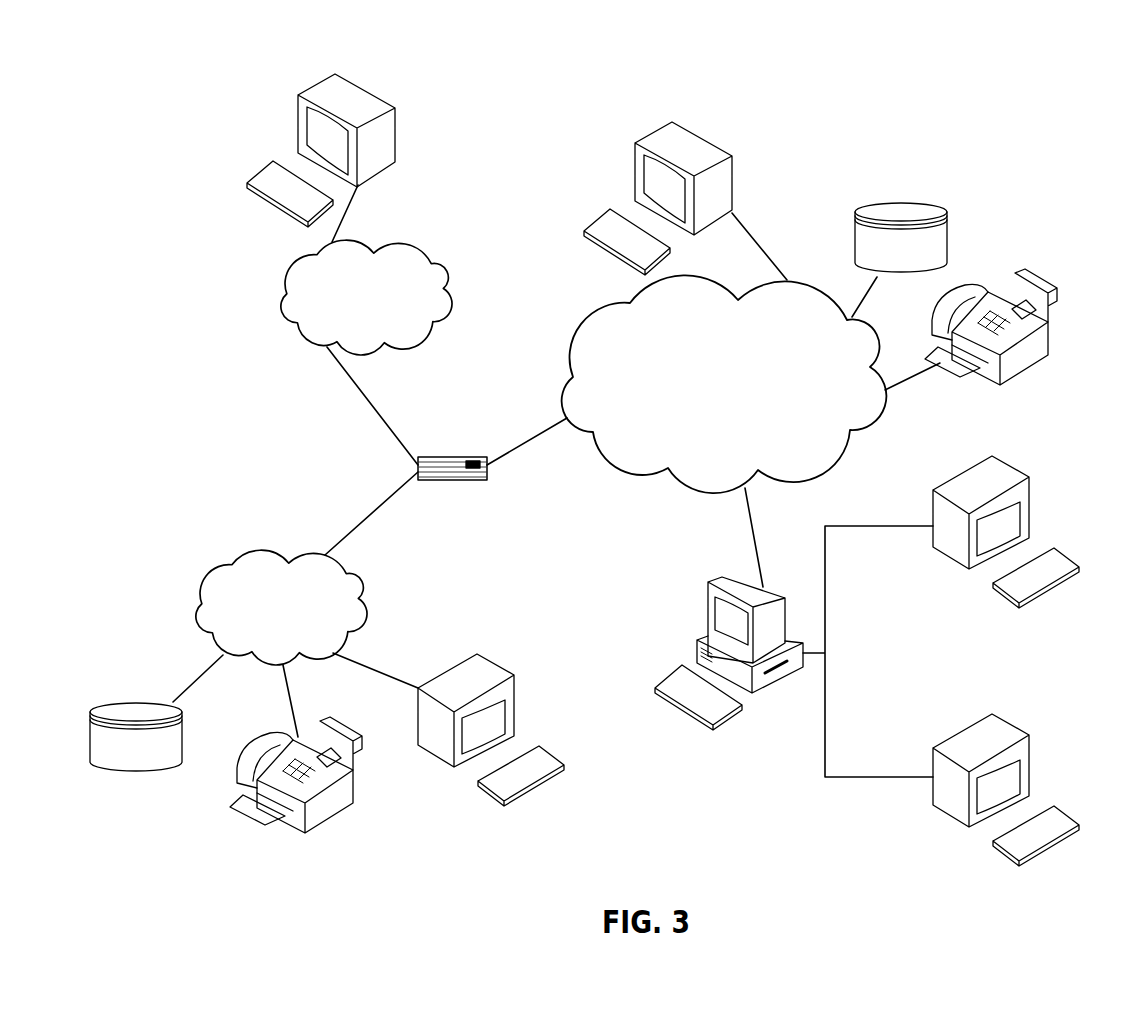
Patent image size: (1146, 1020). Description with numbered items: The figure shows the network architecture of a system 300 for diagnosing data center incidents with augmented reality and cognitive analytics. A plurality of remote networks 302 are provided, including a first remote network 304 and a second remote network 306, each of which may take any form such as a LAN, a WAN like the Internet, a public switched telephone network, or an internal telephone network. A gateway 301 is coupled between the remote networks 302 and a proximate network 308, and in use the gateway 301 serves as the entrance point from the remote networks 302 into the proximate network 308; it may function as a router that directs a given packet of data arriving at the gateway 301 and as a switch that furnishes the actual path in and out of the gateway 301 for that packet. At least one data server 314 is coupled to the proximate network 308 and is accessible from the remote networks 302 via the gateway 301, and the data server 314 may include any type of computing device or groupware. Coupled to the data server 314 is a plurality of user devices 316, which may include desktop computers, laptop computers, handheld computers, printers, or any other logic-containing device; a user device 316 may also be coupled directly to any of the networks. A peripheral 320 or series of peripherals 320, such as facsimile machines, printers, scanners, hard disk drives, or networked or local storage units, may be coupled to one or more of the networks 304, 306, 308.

The system 300 is at (610, 41).
The gateway 301 is at (452, 455).
The remote networks 302 is at (266, 377).
The first remote network 304 is at (203, 578).
The second remote network 306 is at (452, 303).
The proximate network 308 is at (852, 448).
The data server 314 is at (708, 607).
The user devices 316 is at (396, 137).
The peripheral 320 is at (897, 200).